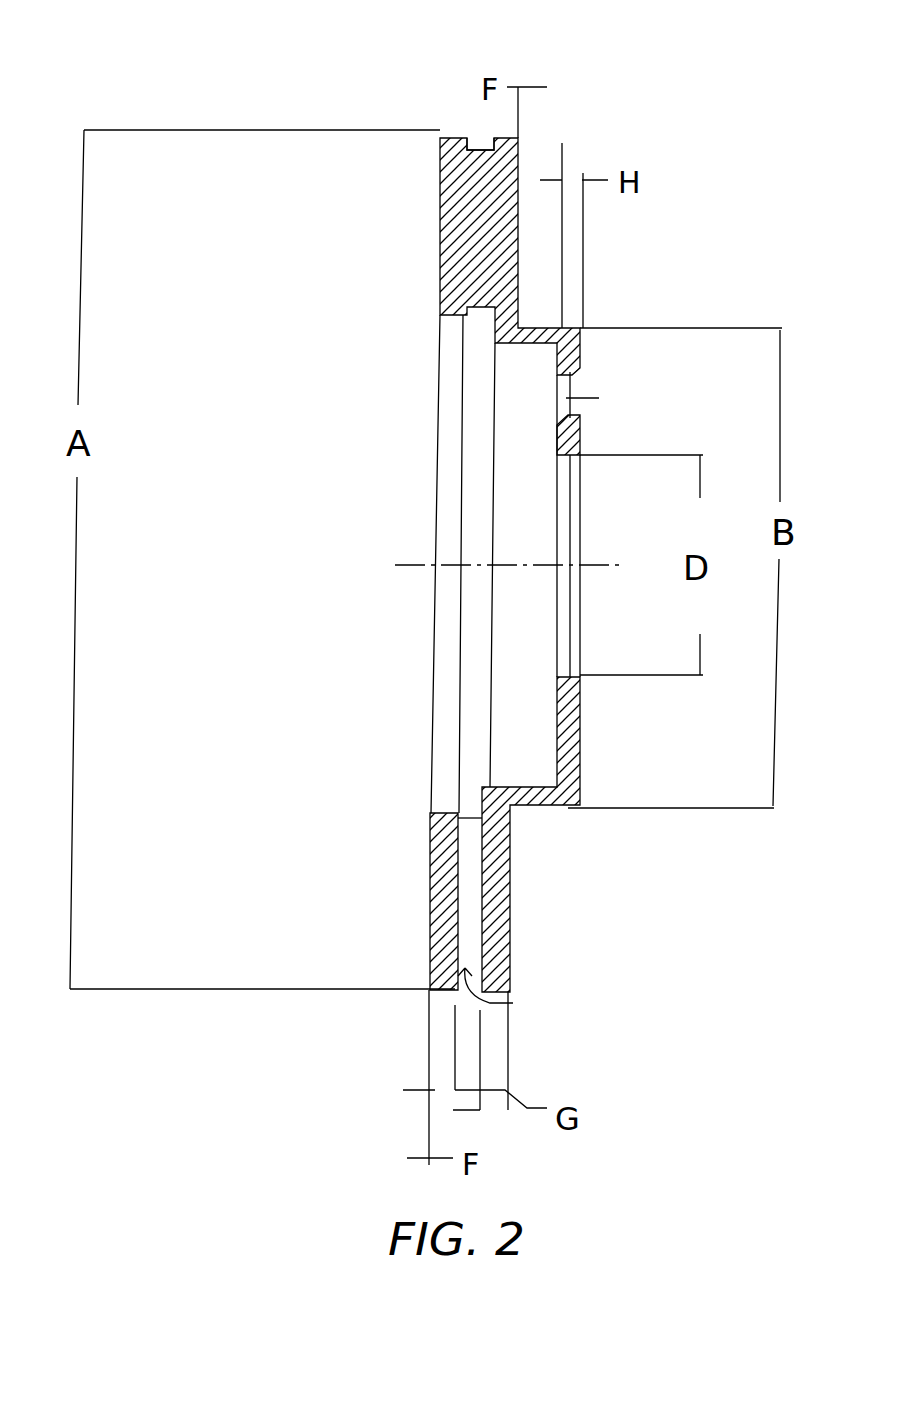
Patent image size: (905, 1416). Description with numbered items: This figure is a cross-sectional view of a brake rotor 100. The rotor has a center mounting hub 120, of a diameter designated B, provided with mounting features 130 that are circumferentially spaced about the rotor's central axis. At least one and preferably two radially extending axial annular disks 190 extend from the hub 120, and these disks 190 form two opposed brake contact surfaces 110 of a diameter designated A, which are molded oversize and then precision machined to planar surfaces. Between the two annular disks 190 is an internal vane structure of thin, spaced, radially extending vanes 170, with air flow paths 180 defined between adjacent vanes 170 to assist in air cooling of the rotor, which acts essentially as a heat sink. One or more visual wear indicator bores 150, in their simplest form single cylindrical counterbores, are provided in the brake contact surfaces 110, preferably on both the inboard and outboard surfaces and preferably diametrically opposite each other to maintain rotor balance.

The brake rotor 100 is at (550, 49).
The brake contact surface 110 is at (427, 893).
The center mounting hub 120 is at (572, 734).
The mounting features 130 is at (582, 387).
The visual wear indicator bore 150 is at (518, 185).
The vanes 170 is at (480, 148).
The air flow paths 180 is at (513, 1003).
The annular disks 190 is at (440, 855).